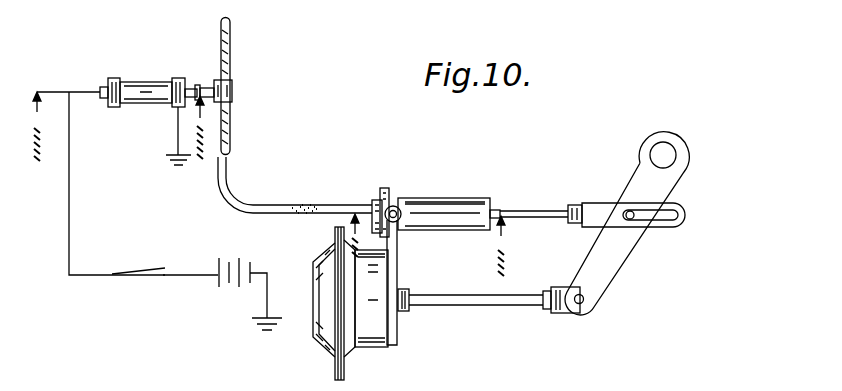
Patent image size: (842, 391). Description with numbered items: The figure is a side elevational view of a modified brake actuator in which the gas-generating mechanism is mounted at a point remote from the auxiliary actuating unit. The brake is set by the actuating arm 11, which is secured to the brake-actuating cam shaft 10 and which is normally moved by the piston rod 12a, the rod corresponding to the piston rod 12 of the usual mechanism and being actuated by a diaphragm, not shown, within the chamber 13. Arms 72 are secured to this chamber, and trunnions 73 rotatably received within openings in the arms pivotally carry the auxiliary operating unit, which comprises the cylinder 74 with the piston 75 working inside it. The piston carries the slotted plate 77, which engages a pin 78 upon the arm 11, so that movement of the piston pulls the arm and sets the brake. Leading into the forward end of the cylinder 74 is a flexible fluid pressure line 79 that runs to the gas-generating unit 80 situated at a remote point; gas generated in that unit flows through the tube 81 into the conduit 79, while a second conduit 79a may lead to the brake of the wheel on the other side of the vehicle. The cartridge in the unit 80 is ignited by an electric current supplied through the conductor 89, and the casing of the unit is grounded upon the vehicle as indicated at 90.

The brake-actuating cam shaft 10 is at (669, 150).
The actuating arm 11 is at (638, 257).
The piston rod 12 is at (127, 126).
The piston rod 12a is at (482, 300).
The chamber 13 is at (360, 333).
The arms 72 is at (397, 247).
The trunnions 73 is at (398, 206).
The cylinder 74 is at (458, 214).
The piston 75 is at (528, 211).
The slotted plate 77 is at (600, 208).
The pin 78 is at (632, 211).
The flexible fluid pressure line 79 is at (287, 212).
The second conduit 79a is at (233, 44).
The gas-generating unit 80 is at (140, 88).
The tube 81 is at (208, 86).
The conductor 89 is at (70, 143).
The ground 90 is at (178, 132).